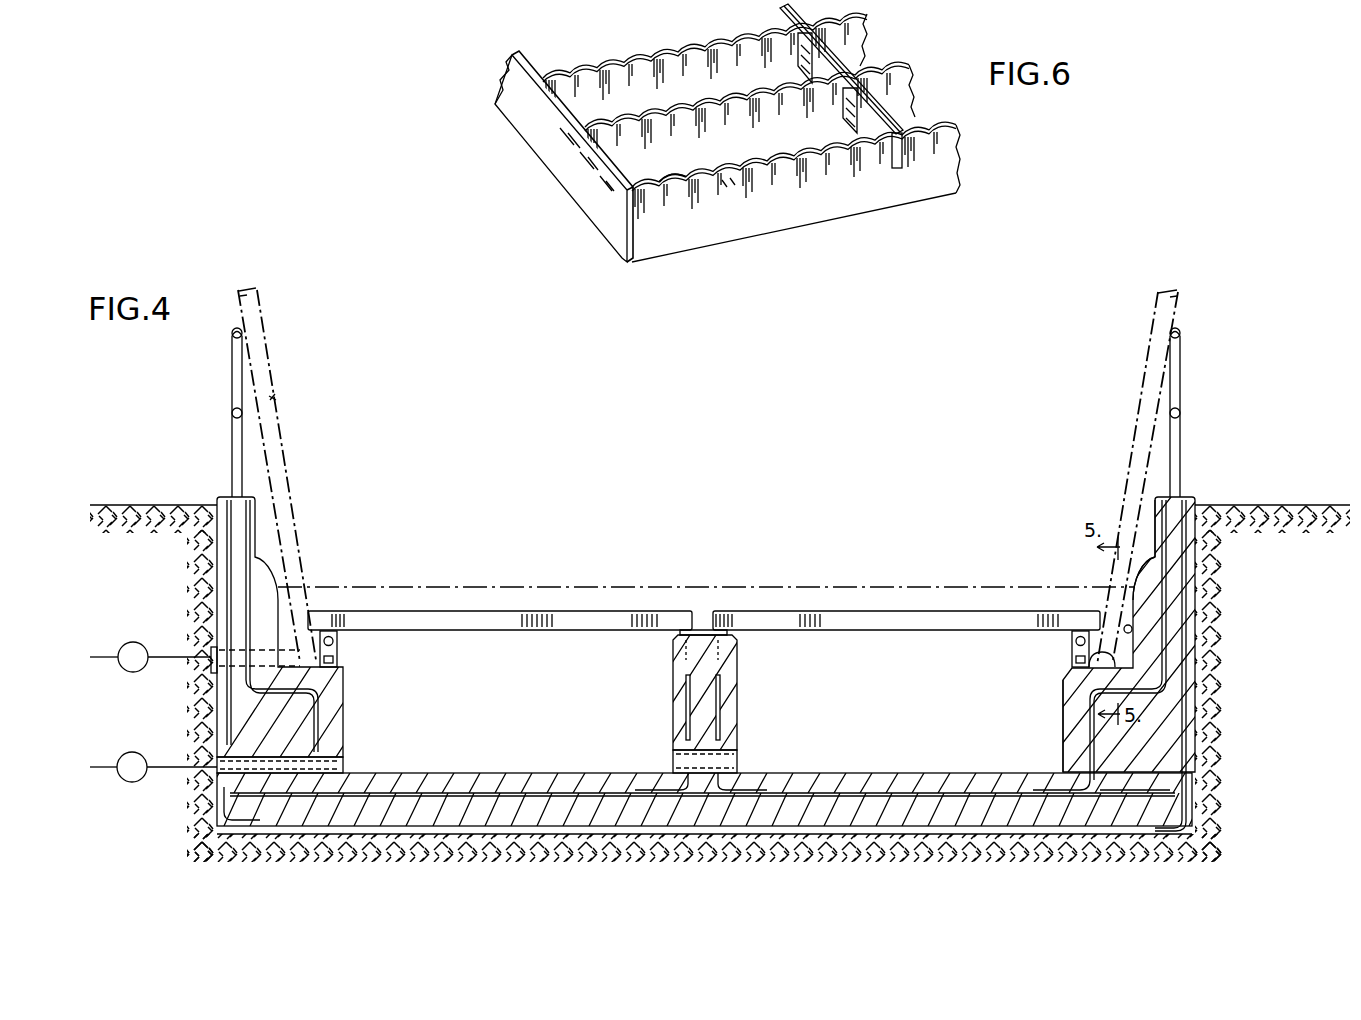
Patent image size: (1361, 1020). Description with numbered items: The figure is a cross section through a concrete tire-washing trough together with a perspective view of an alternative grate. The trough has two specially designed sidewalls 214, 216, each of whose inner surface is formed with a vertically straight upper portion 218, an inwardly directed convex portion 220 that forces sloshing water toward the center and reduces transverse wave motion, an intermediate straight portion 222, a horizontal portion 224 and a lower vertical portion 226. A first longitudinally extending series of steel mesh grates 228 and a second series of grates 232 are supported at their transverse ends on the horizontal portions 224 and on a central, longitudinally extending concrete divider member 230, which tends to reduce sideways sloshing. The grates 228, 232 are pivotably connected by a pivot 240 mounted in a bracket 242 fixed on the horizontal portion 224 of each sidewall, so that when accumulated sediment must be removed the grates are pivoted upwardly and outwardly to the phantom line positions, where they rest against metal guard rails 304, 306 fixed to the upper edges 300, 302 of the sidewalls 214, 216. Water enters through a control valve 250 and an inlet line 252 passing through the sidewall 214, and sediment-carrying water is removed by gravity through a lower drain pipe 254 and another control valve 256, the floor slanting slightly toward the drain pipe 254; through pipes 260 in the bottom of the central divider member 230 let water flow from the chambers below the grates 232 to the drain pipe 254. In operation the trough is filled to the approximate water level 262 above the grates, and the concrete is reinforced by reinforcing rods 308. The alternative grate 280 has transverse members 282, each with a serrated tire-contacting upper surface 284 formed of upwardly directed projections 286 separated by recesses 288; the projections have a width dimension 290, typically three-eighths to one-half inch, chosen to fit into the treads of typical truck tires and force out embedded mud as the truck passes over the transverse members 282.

In FIG. 4, the sidewall 214 is at (226, 500).
In FIG. 4, the sidewall 216 is at (1187, 507).
In FIG. 4, the vertically straight upper portion 218 is at (1155, 520).
In FIG. 4, the inwardly directed convex portion 220 is at (1130, 582).
In FIG. 4, the intermediate straight portion 222 is at (1132, 630).
In FIG. 4, the horizontal portion 224 is at (343, 692).
In FIG. 4, the lower vertical portion 226 is at (1065, 720).
In FIG. 4, the first series of grates 228 is at (274, 397).
In FIG. 4, the central divider member 230 is at (675, 690).
In FIG. 4, the second series of grates 232 is at (1140, 402).
In FIG. 4, the pivot 240 is at (338, 643).
In FIG. 4, the bracket 242 is at (338, 655).
In FIG. 4, the control valve 250 is at (142, 644).
In FIG. 4, the inlet line 252 is at (182, 658).
In FIG. 4, the drain pipe 254 is at (217, 770).
In FIG. 4, the control valve 256 is at (140, 754).
In FIG. 4, the through pipes 260 is at (737, 758).
In FIG. 4, the water level 262 is at (630, 573).
In FIG. 4, the upper edge 300 is at (262, 490).
In FIG. 4, the upper edge 302 is at (1175, 495).
In FIG. 4, the guard rail 304 is at (238, 362).
In FIG. 4, the guard rail 306 is at (1178, 410).
In FIG. 4, the reinforcing rods 308 is at (228, 553).
In FIG. 6, the grate 280 is at (689, 259).
In FIG. 6, the transverse members 282 is at (819, 208).
In FIG. 6, the tire-contacting upper surface 284 is at (797, 148).
In FIG. 6, the projections 286 is at (668, 176).
In FIG. 6, the recesses 288 is at (750, 157).
In FIG. 6, the width dimension 290 is at (703, 210).